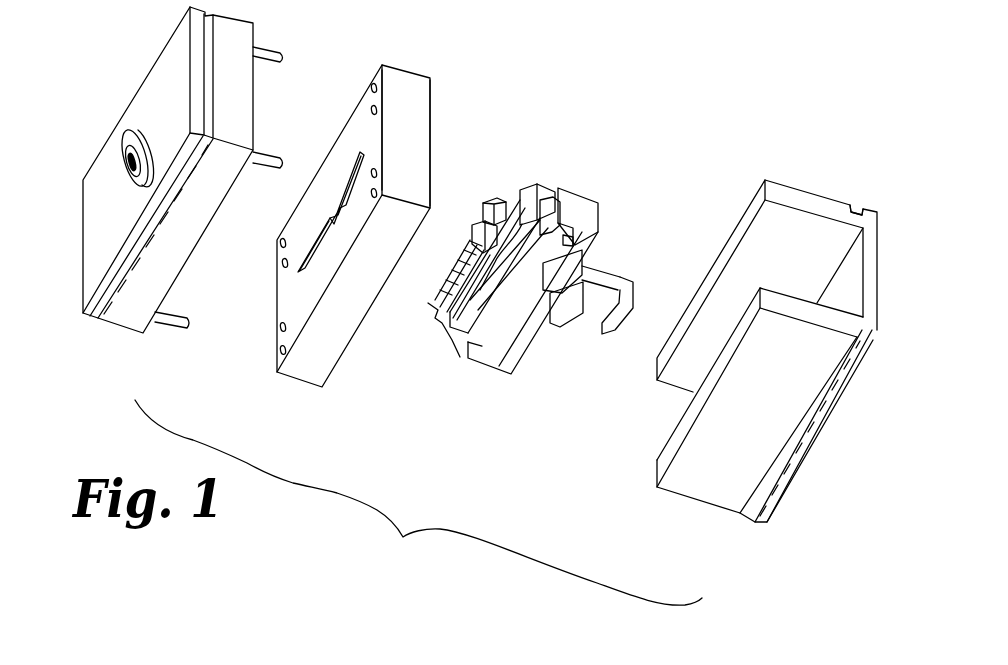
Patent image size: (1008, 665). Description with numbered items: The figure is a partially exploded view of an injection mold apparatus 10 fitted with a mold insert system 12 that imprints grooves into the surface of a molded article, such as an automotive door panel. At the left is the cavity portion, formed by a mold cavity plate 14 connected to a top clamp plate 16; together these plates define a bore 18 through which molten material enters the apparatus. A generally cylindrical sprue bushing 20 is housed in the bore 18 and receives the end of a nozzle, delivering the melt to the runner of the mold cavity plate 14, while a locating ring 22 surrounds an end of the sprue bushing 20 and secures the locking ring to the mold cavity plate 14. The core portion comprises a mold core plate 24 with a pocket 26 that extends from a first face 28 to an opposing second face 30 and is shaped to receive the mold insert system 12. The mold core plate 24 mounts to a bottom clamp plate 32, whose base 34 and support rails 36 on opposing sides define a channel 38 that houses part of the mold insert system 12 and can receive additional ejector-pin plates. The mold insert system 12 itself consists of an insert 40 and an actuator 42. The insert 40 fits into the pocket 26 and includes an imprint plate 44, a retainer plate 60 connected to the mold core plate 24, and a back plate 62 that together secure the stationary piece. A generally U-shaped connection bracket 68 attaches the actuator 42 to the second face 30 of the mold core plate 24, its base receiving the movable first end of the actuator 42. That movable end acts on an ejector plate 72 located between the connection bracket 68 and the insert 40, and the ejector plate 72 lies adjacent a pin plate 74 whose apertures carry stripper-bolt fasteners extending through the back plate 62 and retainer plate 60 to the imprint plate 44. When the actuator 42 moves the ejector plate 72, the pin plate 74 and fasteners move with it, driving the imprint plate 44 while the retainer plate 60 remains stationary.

The injection mold apparatus 10 is at (404, 536).
The mold insert system 12 is at (474, 382).
The mold cavity plate 14 is at (233, 52).
The top clamp plate 16 is at (86, 315).
The bore 18 is at (133, 148).
The sprue bushing 20 is at (131, 161).
The locating ring 22 is at (134, 138).
The mold core plate 24 is at (410, 90).
The pocket 26 is at (345, 172).
The first face 28 is at (361, 100).
The second face 30 is at (431, 99).
The bottom clamp plate 32 is at (873, 333).
The base 34 is at (878, 227).
The support rails 36 is at (660, 463).
The channel 38 is at (760, 257).
The insert 40 is at (438, 323).
The actuator 42 is at (586, 316).
The imprint plate 44 is at (503, 198).
The retainer plate 60 is at (533, 190).
The back plate 62 is at (538, 223).
The connection bracket 68 is at (522, 357).
The ejector plate 72 is at (568, 248).
The pin plate 74 is at (567, 235).